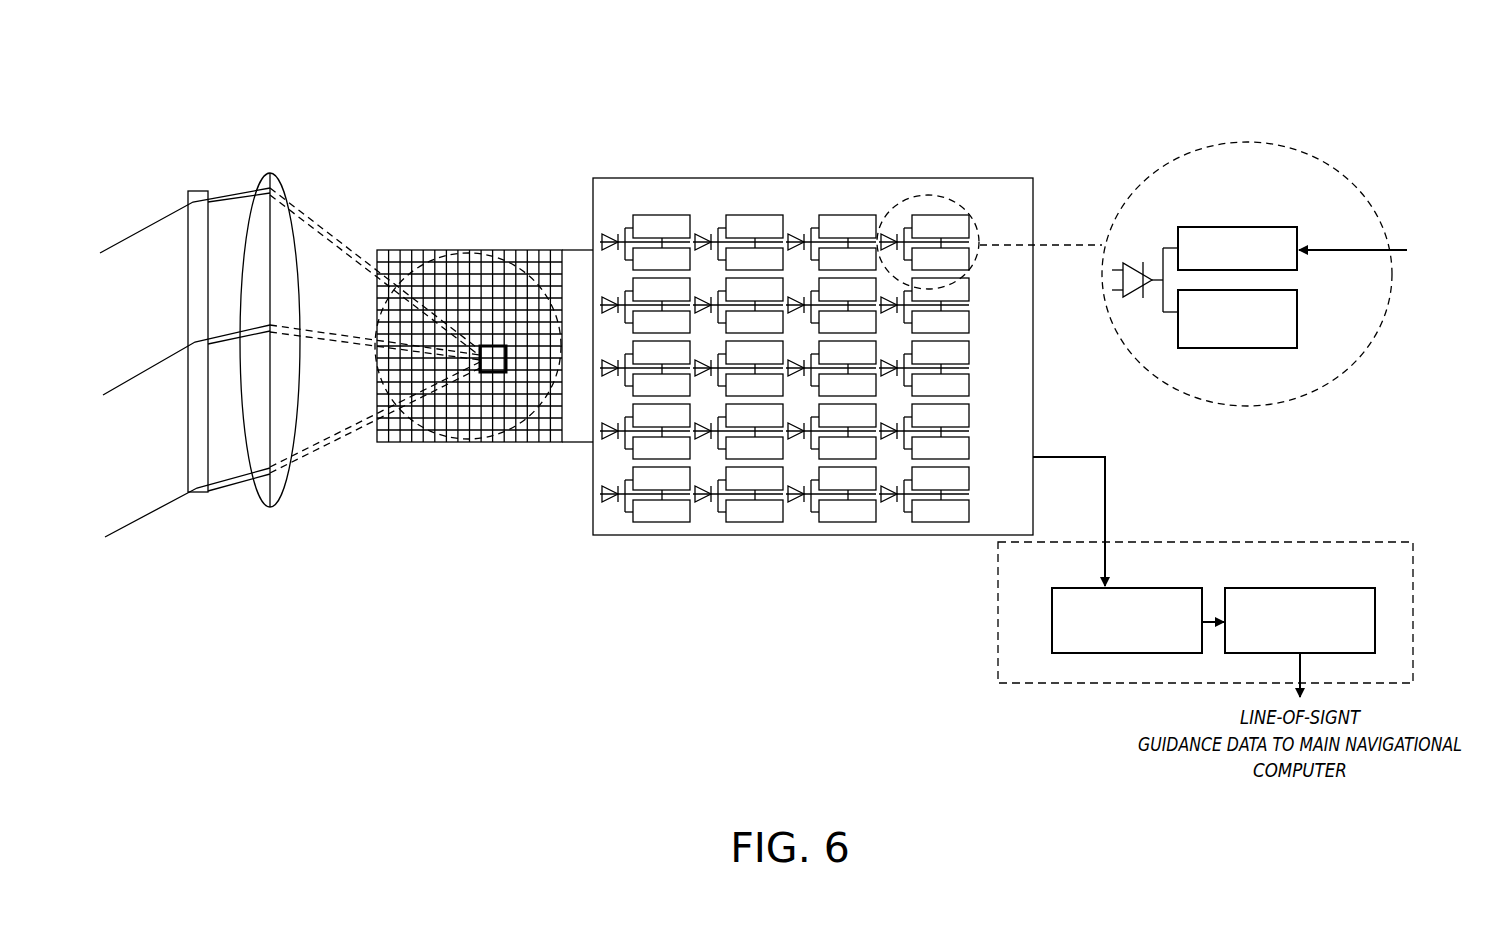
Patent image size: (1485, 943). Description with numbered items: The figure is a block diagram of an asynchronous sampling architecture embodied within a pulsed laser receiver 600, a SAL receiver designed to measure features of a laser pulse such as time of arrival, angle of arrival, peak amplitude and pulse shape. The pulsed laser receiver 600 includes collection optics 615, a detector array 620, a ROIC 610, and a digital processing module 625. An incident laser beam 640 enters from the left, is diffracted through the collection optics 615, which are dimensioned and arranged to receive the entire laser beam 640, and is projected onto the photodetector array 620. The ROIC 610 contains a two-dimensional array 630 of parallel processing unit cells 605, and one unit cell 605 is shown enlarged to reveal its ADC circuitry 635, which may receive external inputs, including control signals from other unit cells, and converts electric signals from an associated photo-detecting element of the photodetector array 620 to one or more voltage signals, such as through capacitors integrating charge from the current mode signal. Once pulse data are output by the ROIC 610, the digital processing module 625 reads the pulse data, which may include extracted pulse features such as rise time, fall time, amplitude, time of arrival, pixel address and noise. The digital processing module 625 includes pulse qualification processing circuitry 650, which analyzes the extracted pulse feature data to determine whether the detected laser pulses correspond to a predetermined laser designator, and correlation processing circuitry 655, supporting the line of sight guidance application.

The pulsed laser receiver 600 is at (805, 64).
The unit cell 605 is at (1250, 273).
The ROIC 610 is at (813, 363).
The collection optics 615 is at (142, 197).
The detector array 620 is at (496, 249).
The digital processing module 625 is at (1233, 591).
The two-dimensional array 630 is at (602, 540).
The ADC circuitry 635 is at (1314, 347).
The incident laser beam 640 is at (128, 386).
The pulse qualification processing circuitry 650 is at (1068, 654).
The correlation processing circuitry 655 is at (1376, 630).